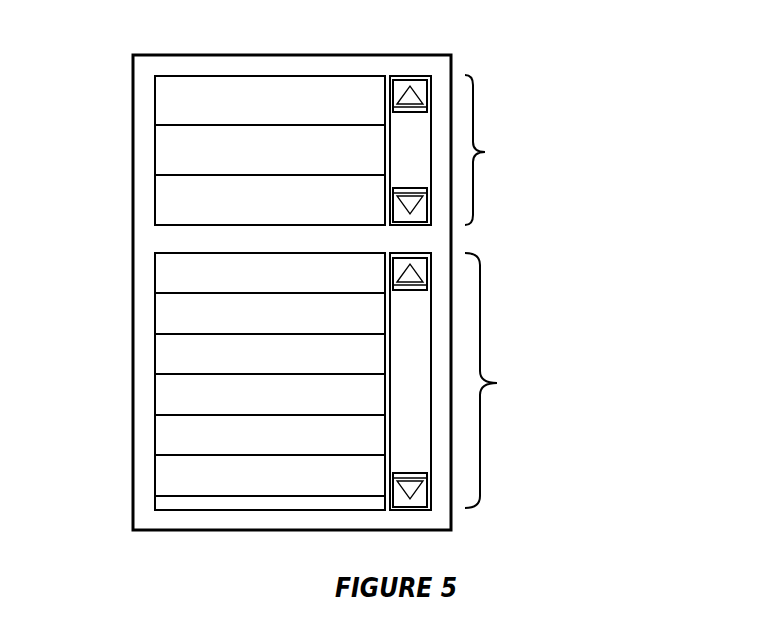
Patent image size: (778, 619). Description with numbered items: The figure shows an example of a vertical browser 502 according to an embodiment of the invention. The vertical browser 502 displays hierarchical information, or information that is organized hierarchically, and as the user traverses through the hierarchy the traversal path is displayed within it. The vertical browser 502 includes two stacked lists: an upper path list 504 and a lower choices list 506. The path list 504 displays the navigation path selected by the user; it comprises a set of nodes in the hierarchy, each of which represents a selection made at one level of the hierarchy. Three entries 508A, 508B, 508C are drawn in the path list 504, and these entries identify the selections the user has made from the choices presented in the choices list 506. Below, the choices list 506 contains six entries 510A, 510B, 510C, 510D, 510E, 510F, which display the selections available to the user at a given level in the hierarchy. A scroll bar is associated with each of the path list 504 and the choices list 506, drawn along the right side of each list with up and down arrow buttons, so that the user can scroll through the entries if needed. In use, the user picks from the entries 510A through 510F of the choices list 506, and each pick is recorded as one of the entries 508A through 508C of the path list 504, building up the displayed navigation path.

The vertical browser 502 is at (368, 55).
The path list 504 is at (330, 143).
The choices list 506 is at (359, 372).
The entry 508A is at (155, 103).
The entry 508B is at (155, 152).
The entry 508C is at (155, 200).
The entry 510A is at (155, 273).
The entry 510B is at (155, 313).
The entry 510C is at (155, 353).
The entry 510D is at (155, 393).
The entry 510E is at (155, 433).
The entry 510F is at (155, 473).